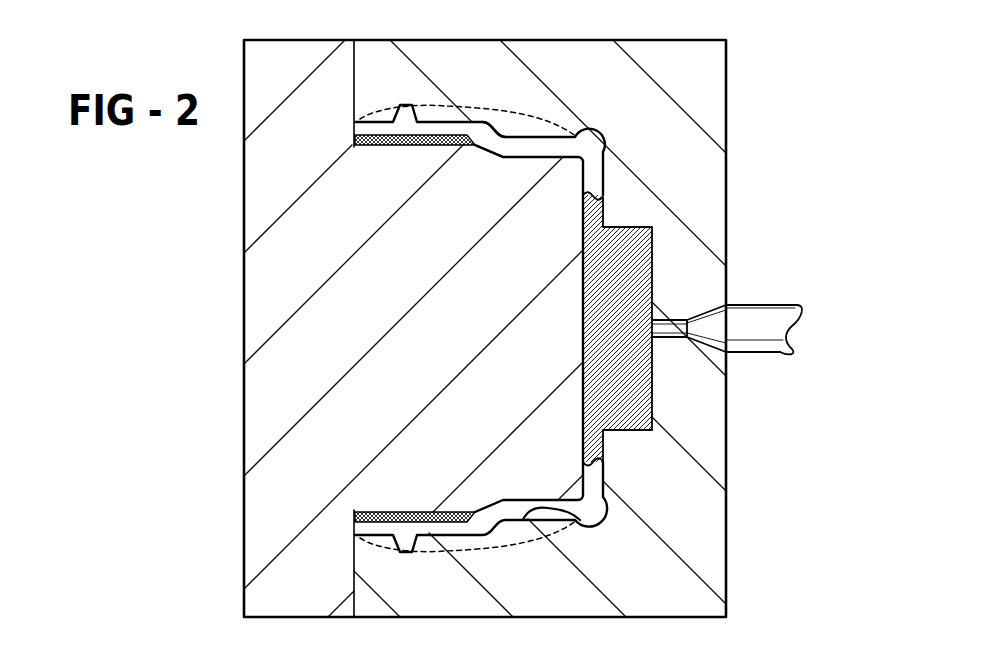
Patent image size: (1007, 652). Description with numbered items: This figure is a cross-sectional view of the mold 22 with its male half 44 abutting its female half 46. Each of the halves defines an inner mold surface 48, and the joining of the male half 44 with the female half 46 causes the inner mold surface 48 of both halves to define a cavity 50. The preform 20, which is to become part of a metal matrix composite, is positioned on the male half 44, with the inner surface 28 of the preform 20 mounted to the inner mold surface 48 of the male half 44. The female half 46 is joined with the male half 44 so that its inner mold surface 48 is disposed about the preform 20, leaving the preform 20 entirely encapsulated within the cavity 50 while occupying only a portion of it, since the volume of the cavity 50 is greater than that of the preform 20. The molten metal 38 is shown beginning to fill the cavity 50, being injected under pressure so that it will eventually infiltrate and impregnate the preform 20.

The preform 20 is at (353, 137).
The mold 22 is at (756, 57).
The inner surface 28 is at (391, 157).
The molten metal 38 is at (632, 372).
The male half 44 is at (263, 556).
The female half 46 is at (700, 527).
The inner mold surface 48 is at (518, 128).
The cavity 50 is at (565, 511).